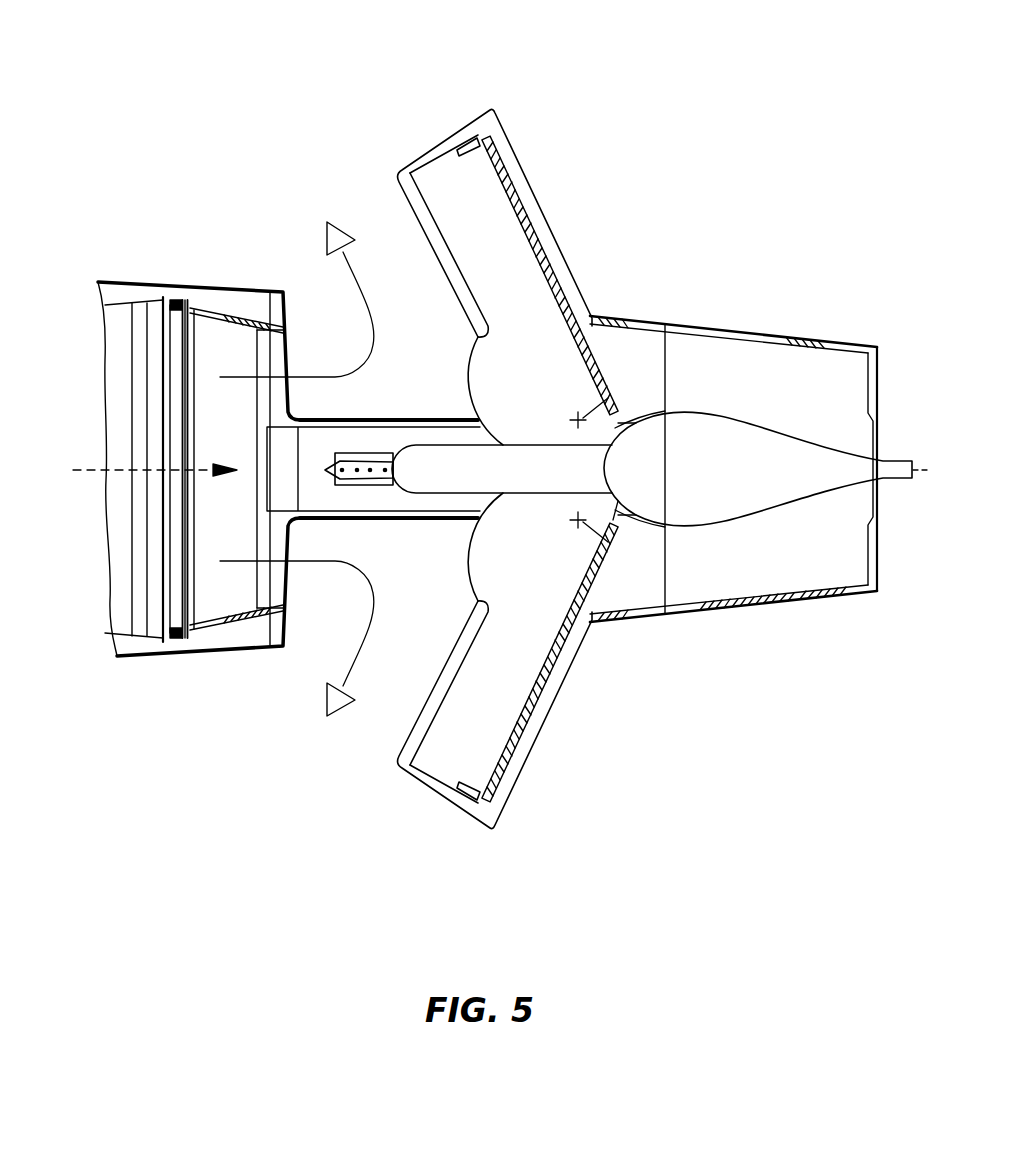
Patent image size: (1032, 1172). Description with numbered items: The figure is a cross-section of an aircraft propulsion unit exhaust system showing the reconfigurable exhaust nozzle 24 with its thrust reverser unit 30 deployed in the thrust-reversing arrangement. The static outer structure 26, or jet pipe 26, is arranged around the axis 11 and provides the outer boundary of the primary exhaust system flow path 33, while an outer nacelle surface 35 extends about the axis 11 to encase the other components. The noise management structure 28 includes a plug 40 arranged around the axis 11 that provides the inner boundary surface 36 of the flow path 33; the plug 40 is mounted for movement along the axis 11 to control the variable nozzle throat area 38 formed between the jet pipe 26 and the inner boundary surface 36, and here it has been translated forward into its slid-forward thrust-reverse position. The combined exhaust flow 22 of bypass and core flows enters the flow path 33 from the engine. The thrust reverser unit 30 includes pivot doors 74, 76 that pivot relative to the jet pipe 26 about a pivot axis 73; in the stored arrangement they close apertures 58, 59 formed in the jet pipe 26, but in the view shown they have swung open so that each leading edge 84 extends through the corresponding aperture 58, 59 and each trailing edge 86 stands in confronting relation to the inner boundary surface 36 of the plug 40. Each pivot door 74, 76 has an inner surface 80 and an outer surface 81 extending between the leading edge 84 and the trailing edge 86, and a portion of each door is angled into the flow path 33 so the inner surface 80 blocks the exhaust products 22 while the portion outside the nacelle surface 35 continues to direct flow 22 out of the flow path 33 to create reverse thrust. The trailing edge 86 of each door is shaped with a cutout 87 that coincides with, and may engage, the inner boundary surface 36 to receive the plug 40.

The axis 11 is at (925, 480).
The combined exhaust flow 22 is at (375, 342).
The reconfigurable exhaust nozzle 24 is at (638, 85).
The static outer structure 26 is at (228, 282).
The noise management structure 28 is at (877, 340).
The thrust reverser unit 30 is at (615, 212).
The primary exhaust system flow path 33 is at (110, 470).
The outer nacelle surface 35 is at (127, 283).
The inner boundary surface 36 is at (747, 517).
The variable nozzle throat area 38 is at (780, 405).
The plug 40 is at (832, 435).
The aperture 58 is at (331, 324).
The aperture 59 is at (343, 603).
The pivot axis 73 is at (618, 437).
The pivot door 74 is at (547, 209).
The pivot door 76 is at (577, 665).
The inner surface 80 is at (478, 168).
The outer surface 81 is at (507, 135).
The leading edge 84 is at (428, 134).
The trailing edge 86 is at (651, 377).
The cutout 87 is at (650, 378).